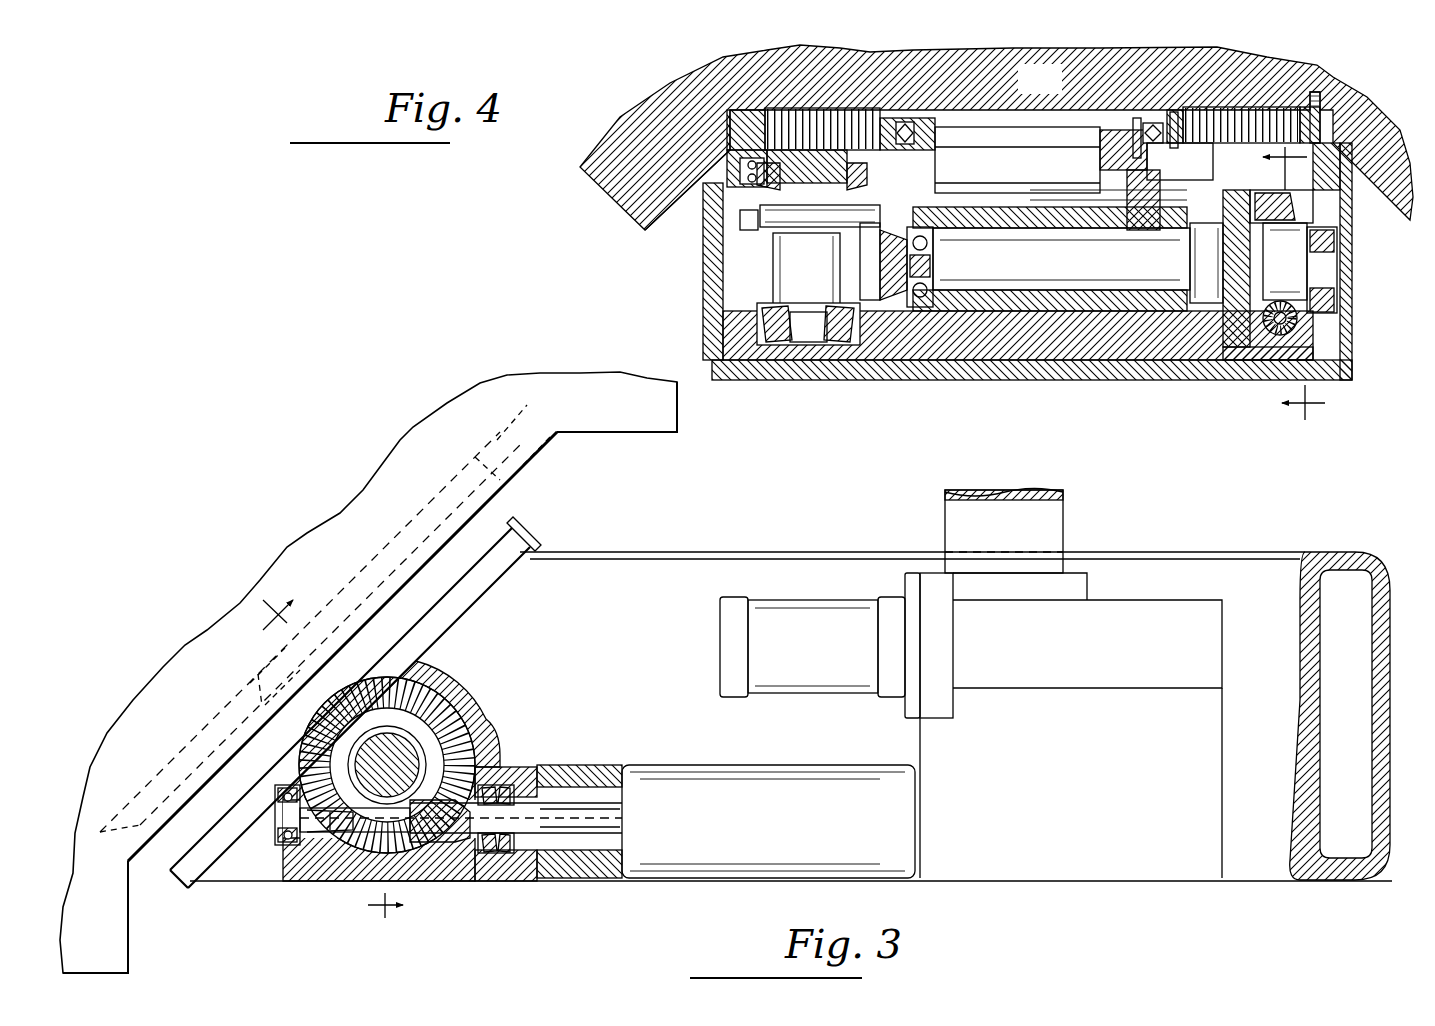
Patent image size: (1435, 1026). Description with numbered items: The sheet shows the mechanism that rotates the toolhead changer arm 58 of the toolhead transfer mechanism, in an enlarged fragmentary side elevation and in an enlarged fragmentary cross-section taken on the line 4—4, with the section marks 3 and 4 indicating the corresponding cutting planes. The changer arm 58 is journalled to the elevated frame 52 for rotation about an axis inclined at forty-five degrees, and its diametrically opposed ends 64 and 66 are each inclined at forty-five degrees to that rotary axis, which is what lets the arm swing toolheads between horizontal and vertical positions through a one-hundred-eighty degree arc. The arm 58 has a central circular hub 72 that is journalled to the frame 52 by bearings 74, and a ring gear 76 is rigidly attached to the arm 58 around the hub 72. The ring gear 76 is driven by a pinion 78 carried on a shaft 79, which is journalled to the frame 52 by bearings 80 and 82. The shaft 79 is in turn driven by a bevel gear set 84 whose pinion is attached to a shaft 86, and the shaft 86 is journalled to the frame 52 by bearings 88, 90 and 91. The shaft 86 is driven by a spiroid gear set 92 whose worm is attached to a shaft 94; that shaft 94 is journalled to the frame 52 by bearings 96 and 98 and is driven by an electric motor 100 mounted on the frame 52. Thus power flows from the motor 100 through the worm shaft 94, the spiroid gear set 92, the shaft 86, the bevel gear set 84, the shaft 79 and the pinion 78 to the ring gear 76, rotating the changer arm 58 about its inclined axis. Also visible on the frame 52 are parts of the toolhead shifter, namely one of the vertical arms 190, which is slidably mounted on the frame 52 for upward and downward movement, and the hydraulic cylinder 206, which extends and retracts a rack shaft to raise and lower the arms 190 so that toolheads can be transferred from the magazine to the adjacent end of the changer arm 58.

In FIG. 3, the elevated frame 52 is at (1207, 580).
In FIG. 4, the toolhead changer arm 58 is at (1052, 90).
In FIG. 3, the toolhead changer arm 58 is at (380, 490).
In FIG. 3, the end of toolhead changer arm 64 is at (118, 938).
In FIG. 3, the end of toolhead changer arm 66 is at (592, 390).
In FIG. 4, the central circular hub 72 is at (1117, 125).
In FIG. 3, the central circular hub 72 is at (455, 583).
In FIG. 4, the bearings 74 is at (1155, 150).
In FIG. 4, the ring gear 76 is at (730, 125).
In FIG. 3, the ring gear 76 is at (540, 447).
In FIG. 4, the pinion 78 is at (812, 150).
In FIG. 3, the pinion 78 is at (327, 640).
In FIG. 4, the shaft 79 is at (815, 258).
In FIG. 4, the bearing 80 is at (826, 203).
In FIG. 4, the bearing 82 is at (762, 315).
In FIG. 4, the bevel gear set 84 is at (860, 262).
In FIG. 4, the shaft 86 is at (1051, 250).
In FIG. 4, the bearing 88 is at (935, 282).
In FIG. 4, the bearing 90 is at (1210, 300).
In FIG. 4, the bearing 91 is at (1340, 310).
In FIG. 4, the spiroid gear set 92 is at (1275, 338).
In FIG. 3, the spiroid gear set 92 is at (437, 850).
In FIG. 3, the shaft 94 is at (368, 838).
In FIG. 3, the bearing 96 is at (280, 840).
In FIG. 3, the bearing 98 is at (505, 790).
In FIG. 3, the electric motor 100 is at (783, 833).
In FIG. 3, the vertical arms 190 is at (1050, 528).
In FIG. 3, the hydraulic cylinder 206 is at (828, 655).
In FIG. 4, the section line 3- 3 is at (1302, 283).
In FIG. 3, the section line 4- 4 is at (321, 759).